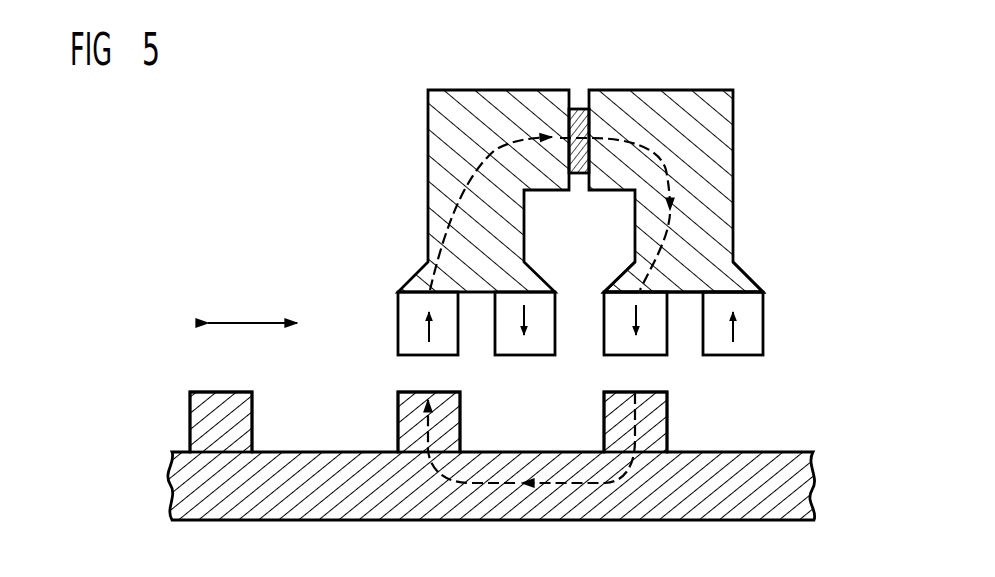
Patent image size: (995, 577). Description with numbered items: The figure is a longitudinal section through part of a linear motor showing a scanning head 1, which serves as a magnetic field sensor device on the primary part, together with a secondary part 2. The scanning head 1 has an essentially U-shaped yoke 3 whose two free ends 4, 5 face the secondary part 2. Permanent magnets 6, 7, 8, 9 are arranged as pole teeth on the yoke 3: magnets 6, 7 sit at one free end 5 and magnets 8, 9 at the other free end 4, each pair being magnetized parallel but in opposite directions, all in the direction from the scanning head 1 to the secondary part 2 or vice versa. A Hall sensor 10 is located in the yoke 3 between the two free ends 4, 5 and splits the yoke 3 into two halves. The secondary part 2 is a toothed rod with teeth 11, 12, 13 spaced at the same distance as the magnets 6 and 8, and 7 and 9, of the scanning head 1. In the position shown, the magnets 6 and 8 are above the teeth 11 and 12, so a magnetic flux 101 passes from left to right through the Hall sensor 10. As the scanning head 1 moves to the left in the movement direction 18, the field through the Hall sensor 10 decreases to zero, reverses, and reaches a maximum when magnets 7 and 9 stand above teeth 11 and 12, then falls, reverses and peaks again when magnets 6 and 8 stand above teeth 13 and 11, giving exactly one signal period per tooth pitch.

The scanning head 1 is at (568, 225).
The secondary part 2 is at (491, 448).
The yoke 3 is at (735, 127).
The free end 4 is at (680, 290).
The free end 5 is at (428, 260).
The permanent magnet 6 is at (398, 335).
The permanent magnet 7 is at (508, 357).
The permanent magnet 8 is at (604, 352).
The permanent magnet 9 is at (763, 335).
The Hall sensor 10 is at (571, 107).
The tooth 11 is at (398, 425).
The tooth 12 is at (667, 425).
The tooth 13 is at (252, 425).
The movement direction 18 is at (253, 322).
The magnetic flux 101 is at (655, 140).